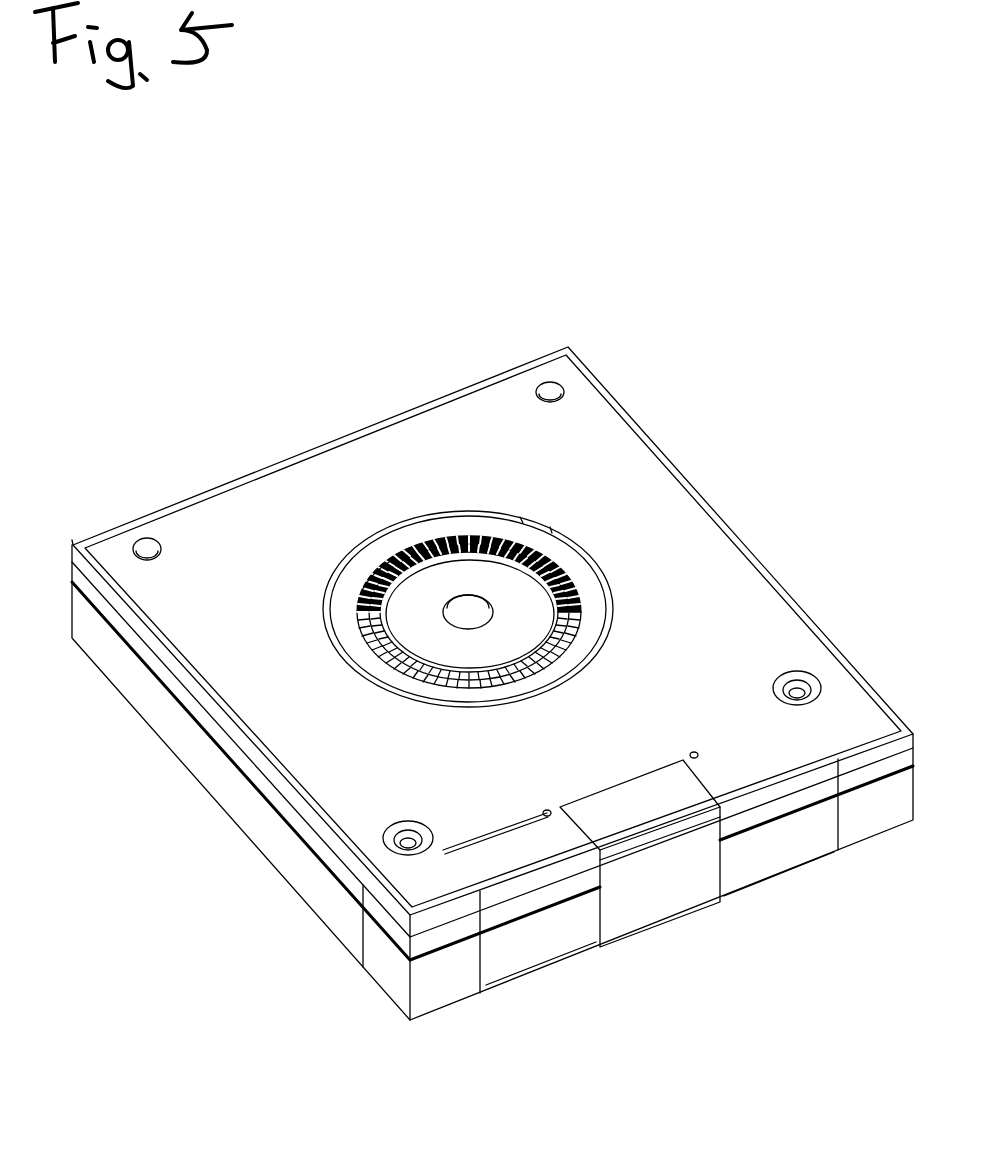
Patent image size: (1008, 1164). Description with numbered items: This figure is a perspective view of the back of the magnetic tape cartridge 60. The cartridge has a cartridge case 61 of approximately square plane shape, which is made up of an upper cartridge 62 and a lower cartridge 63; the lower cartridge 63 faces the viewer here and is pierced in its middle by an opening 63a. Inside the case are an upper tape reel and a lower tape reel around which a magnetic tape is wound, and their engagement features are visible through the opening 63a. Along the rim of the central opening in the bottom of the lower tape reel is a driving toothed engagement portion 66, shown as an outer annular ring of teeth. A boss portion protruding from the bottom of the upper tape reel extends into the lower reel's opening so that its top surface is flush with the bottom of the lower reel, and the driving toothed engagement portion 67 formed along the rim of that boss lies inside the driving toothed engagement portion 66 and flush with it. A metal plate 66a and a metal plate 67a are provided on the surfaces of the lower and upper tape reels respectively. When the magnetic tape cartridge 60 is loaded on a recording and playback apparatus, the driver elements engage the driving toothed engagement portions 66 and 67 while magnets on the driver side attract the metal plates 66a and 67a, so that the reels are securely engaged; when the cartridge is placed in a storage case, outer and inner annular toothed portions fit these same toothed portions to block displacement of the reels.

The magnetic tape cartridge 60 is at (566, 309).
The cartridge case 61 is at (622, 449).
The upper cartridge 62 is at (877, 807).
The lower cartridge 63 is at (692, 535).
The opening of the lower cartridge 63a is at (552, 532).
The driving toothed engagement portion 66 is at (360, 592).
The metal plate 66a is at (372, 552).
The driving toothed engagement portion 67 is at (408, 636).
The metal plate 67a is at (430, 640).